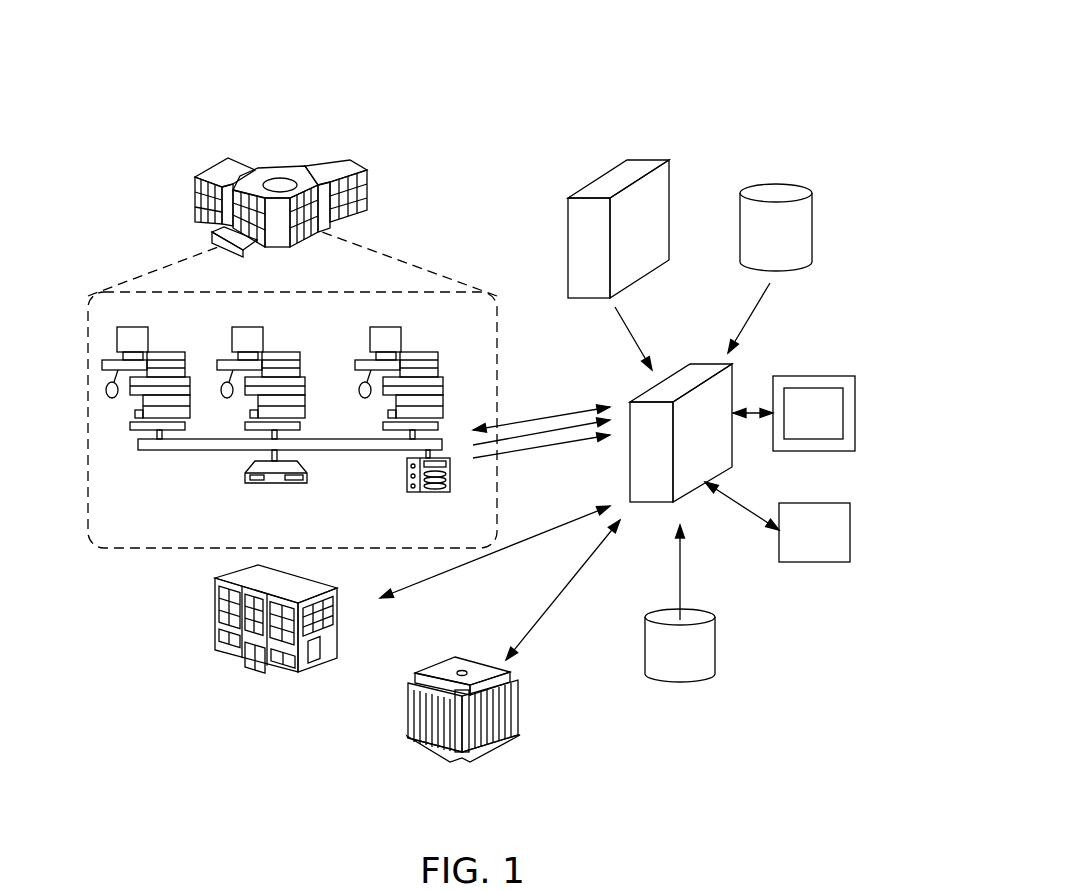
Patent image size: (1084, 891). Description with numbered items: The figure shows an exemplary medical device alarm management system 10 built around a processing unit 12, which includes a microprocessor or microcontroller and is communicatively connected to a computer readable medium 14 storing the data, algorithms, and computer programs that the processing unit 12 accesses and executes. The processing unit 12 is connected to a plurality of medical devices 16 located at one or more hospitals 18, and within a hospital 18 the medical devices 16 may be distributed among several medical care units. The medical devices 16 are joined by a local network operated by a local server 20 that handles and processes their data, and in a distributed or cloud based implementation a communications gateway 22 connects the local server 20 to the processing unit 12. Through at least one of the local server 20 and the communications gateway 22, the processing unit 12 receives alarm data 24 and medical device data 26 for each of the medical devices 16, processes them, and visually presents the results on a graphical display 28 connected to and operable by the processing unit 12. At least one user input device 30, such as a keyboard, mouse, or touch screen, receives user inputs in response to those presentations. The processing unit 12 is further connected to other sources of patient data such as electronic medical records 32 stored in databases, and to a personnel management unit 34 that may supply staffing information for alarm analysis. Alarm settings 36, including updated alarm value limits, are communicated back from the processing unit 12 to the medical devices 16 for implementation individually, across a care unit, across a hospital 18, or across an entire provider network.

The system 10 is at (478, 62).
The processing unit 12 is at (713, 360).
The computer readable medium 14 is at (717, 648).
The medical devices 16 is at (150, 338).
The hospital 18 is at (278, 163).
The local server 20 is at (270, 489).
The communications gateway 22 is at (407, 484).
The alarm data 24 is at (517, 444).
The medical device data 26 is at (582, 437).
The graphical display 28 is at (817, 373).
The user input device 30 is at (851, 535).
The electronic medical records 32 is at (813, 228).
The personnel management unit 34 is at (670, 175).
The alarm settings 36 is at (547, 419).